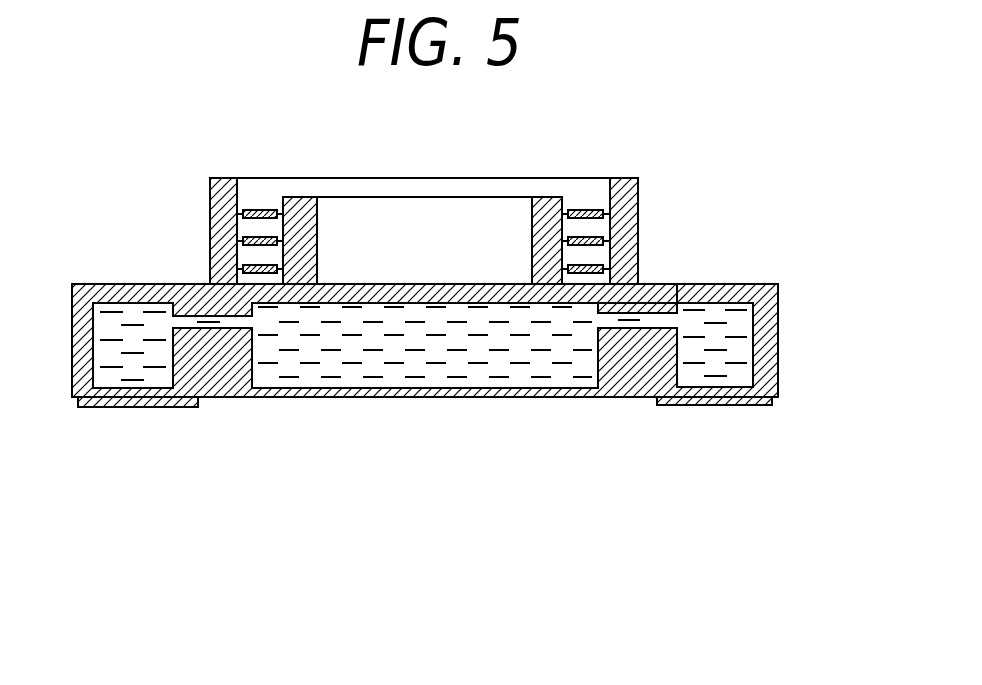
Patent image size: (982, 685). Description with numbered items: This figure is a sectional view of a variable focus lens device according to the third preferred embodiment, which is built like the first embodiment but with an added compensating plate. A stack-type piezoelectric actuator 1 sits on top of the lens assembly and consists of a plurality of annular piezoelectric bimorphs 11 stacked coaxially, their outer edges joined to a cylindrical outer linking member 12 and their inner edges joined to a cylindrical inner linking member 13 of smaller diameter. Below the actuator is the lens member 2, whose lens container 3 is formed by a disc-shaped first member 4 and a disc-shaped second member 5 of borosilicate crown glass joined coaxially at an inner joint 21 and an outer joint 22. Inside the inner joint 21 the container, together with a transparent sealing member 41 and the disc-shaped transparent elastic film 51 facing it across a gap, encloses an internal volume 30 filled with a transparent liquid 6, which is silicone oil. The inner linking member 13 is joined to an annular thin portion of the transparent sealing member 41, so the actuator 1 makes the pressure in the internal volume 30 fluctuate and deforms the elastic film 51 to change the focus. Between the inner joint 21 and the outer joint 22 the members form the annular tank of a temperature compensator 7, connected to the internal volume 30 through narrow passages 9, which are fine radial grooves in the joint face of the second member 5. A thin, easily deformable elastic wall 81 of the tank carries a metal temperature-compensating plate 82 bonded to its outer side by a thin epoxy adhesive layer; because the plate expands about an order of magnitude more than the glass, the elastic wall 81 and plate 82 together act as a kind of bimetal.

The stack-type piezoelectric actuator 1 is at (645, 203).
The annular piezoelectric bimorphs 11 is at (260, 208).
The outer linking member 12 is at (210, 213).
The inner linking member 13 is at (318, 225).
The transparent sealing member 41 is at (441, 287).
The lens member 2 is at (505, 414).
The inner joint 21 is at (656, 276).
The outer joint 22 is at (761, 274).
The first member 4 is at (780, 291).
The second member 5 is at (780, 334).
The lens container 3 is at (380, 400).
The transparent elastic film 51 is at (325, 400).
The transparent liquid 6 is at (548, 355).
The internal volume 30 is at (467, 358).
The narrow passages 9 is at (232, 322).
The temperature compensator 7 is at (623, 467).
The elastic wall 81 is at (710, 406).
The temperature-compensating plate 82 is at (775, 399).